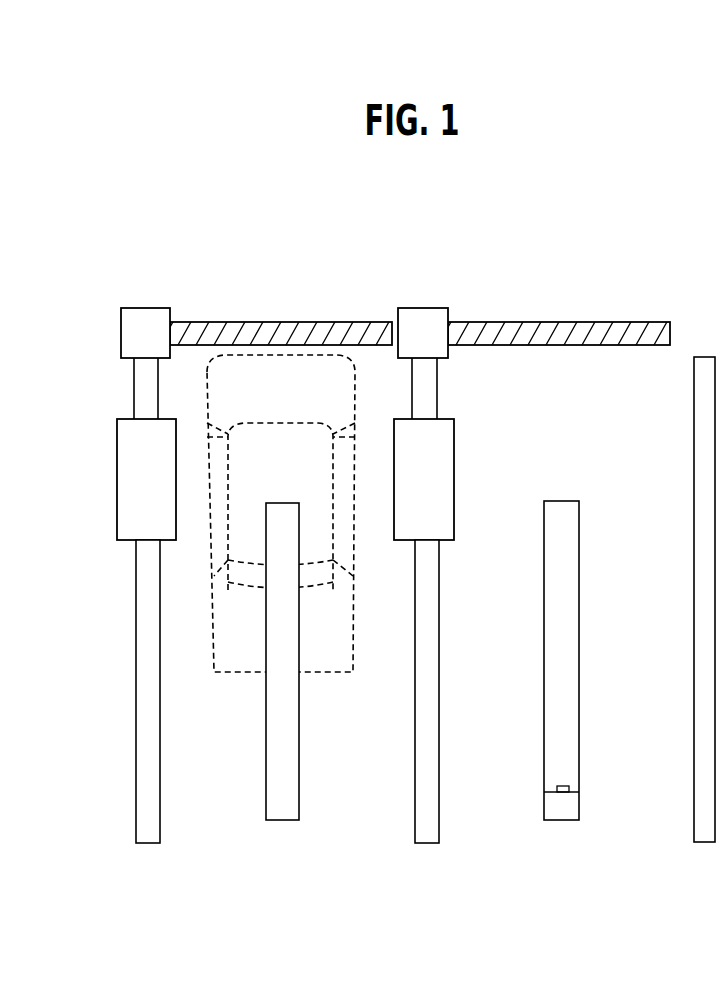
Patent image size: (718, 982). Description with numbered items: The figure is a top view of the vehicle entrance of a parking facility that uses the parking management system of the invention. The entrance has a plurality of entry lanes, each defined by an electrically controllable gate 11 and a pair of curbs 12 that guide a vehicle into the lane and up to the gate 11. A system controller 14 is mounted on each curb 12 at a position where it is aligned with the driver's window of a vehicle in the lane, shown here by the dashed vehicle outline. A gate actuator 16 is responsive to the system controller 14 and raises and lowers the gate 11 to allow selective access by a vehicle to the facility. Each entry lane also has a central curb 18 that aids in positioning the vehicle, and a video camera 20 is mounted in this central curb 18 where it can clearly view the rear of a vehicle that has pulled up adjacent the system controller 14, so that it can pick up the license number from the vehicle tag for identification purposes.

The electrically controllable gate 11 is at (284, 322).
The curb 12 is at (150, 715).
The system controller 14 is at (156, 495).
The gate actuator 16 is at (138, 322).
The central curb 18 is at (300, 722).
The video camera 20 is at (300, 797).